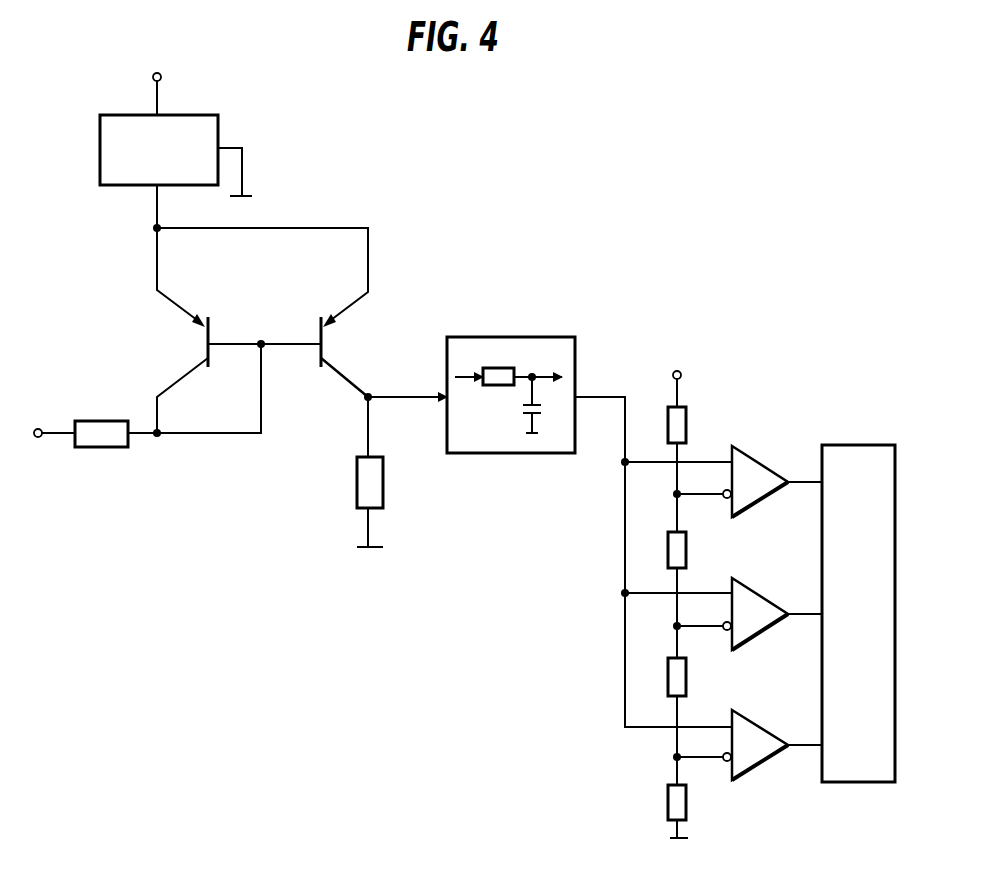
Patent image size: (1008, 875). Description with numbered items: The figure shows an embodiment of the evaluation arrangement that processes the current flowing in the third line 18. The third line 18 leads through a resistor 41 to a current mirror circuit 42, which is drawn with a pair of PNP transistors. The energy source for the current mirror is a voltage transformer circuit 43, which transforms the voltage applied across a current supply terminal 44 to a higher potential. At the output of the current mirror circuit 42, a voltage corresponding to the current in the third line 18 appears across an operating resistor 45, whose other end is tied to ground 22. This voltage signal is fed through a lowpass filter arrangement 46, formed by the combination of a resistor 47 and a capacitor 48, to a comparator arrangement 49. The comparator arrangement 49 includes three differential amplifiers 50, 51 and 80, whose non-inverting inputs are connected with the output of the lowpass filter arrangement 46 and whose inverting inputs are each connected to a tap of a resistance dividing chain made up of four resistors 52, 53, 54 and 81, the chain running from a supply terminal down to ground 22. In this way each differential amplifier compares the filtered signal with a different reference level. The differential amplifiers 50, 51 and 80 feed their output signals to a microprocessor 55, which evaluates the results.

The third line 18 is at (60, 433).
The ground 22 is at (360, 547).
The resistor 41 is at (88, 421).
The current mirror circuit 42 is at (249, 268).
The voltage transformer circuit 43 is at (182, 115).
The current supply terminal 44 is at (152, 78).
The operating resistor 45 is at (357, 487).
The lowpass filter arrangement 46 is at (535, 337).
The resistor 47 is at (491, 368).
The capacitor 48 is at (522, 410).
The comparator arrangement 49 is at (775, 541).
The differential amplifier 50 is at (745, 453).
The differential amplifier 51 is at (745, 583).
The resistor 52 is at (668, 430).
The resistor 53 is at (668, 556).
The resistor 54 is at (668, 683).
The microprocessor 55 is at (850, 445).
The differential amplifier 80 is at (745, 716).
The resistor 81 is at (668, 808).